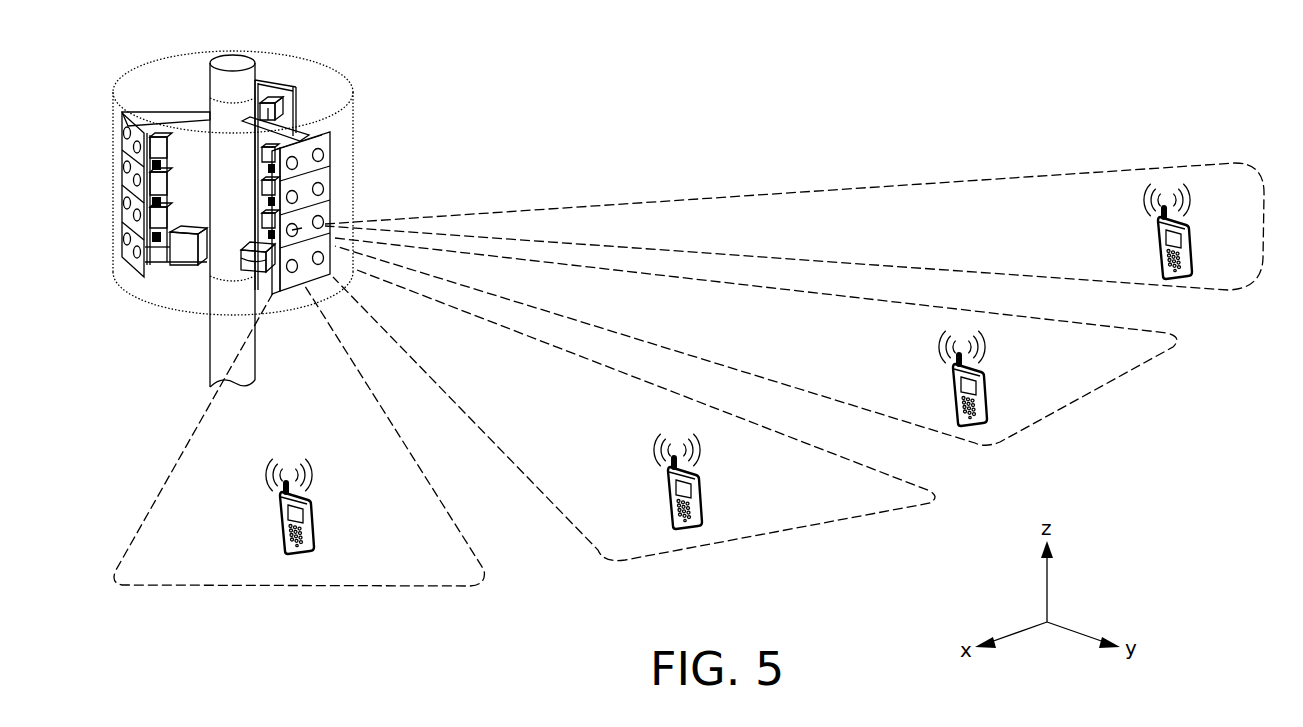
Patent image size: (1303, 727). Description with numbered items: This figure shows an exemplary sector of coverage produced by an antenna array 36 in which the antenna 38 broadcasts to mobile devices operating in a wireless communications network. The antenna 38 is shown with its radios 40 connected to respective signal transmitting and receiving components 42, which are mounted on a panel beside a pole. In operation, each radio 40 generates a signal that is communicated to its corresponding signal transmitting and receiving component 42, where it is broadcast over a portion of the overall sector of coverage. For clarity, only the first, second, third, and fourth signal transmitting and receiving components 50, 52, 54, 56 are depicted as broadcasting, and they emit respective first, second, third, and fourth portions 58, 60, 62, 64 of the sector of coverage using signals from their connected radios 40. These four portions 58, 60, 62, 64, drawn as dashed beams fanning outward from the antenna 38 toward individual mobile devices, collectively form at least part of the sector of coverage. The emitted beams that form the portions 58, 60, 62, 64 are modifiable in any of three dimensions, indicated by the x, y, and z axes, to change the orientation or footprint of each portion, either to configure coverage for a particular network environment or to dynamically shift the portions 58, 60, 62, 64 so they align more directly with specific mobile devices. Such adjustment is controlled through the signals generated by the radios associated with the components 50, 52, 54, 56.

The antenna array 36 is at (260, 38).
The antenna 38 is at (284, 126).
The radios 40 is at (268, 160).
The signal transmitting and receiving components 42 is at (298, 162).
The first signal transmitting and receiving component 50 is at (292, 270).
The second signal transmitting and receiving component 52 is at (320, 265).
The third signal transmitting and receiving component 54 is at (290, 235).
The fourth signal transmitting and receiving component 56 is at (324, 221).
The first portion of the sector of coverage 58 is at (369, 468).
The second portion of the sector of coverage 60 is at (593, 433).
The third portion of the sector of coverage 62 is at (795, 340).
The fourth portion of the sector of coverage 64 is at (915, 233).